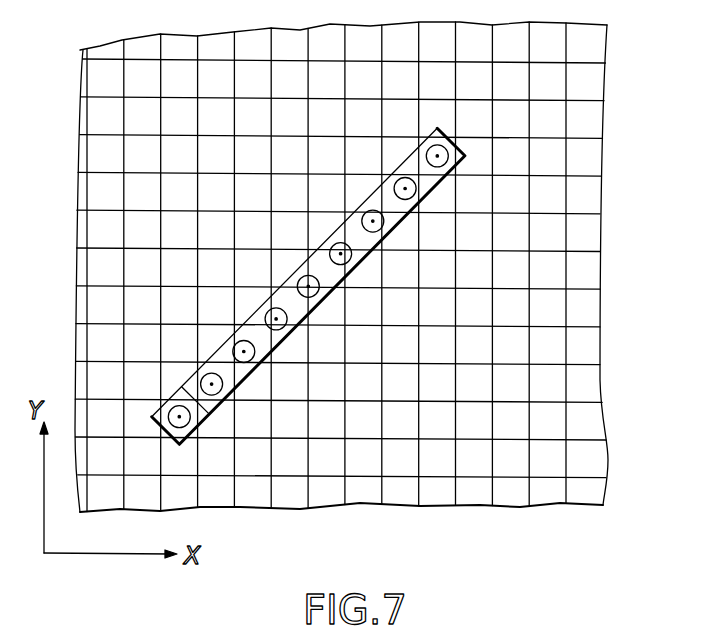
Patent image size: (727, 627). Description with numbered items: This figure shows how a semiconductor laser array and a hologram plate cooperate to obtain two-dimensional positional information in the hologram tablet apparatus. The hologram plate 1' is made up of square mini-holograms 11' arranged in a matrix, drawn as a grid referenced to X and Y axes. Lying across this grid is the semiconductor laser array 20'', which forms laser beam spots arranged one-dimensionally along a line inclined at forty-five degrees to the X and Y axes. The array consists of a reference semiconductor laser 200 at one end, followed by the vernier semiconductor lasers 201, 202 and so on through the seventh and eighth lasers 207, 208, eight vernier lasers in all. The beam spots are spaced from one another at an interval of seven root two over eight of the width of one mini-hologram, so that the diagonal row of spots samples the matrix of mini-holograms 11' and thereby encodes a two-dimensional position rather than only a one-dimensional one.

The hologram plate 1' is at (341, 257).
The mini-holograms 11' is at (341, 514).
The semiconductor laser array 20'' is at (308, 286).
The reference semiconductor laser 200 is at (170, 411).
The semiconductor laser 201 is at (204, 376).
The semiconductor laser 202 is at (236, 343).
The semiconductor laser 207 is at (397, 181).
The semiconductor laser 208 is at (429, 150).